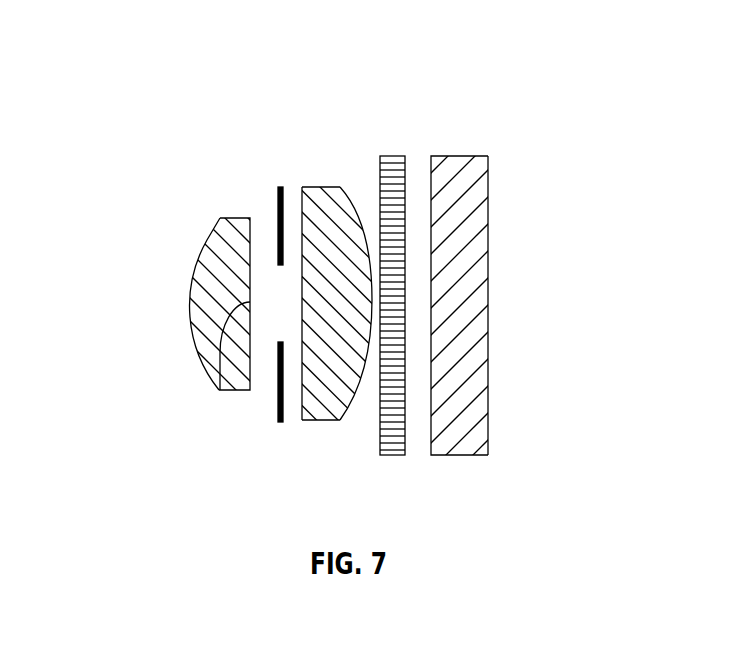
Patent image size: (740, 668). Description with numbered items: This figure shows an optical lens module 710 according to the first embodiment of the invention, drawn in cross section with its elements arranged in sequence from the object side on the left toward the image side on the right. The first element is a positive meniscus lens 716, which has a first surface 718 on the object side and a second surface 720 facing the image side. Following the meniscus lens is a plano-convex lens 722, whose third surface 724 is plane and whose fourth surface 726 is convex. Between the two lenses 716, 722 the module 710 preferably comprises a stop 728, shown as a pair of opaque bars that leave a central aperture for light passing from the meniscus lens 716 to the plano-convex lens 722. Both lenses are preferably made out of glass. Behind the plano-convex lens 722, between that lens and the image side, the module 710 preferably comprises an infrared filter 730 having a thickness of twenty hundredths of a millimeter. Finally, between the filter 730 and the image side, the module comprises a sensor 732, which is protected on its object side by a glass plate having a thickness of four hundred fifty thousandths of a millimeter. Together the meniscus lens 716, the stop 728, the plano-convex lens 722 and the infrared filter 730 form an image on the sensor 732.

The module 710 is at (166, 118).
The positive meniscus lens 716 is at (245, 222).
The first surface 718 is at (216, 230).
The second surface 720 is at (219, 388).
The plano-convex lens 722 is at (320, 413).
The third surface 724 is at (303, 288).
The fourth surface 726 is at (345, 412).
The stop 728 is at (277, 419).
The infrared filter 730 is at (458, 156).
The sensor 732 is at (488, 290).